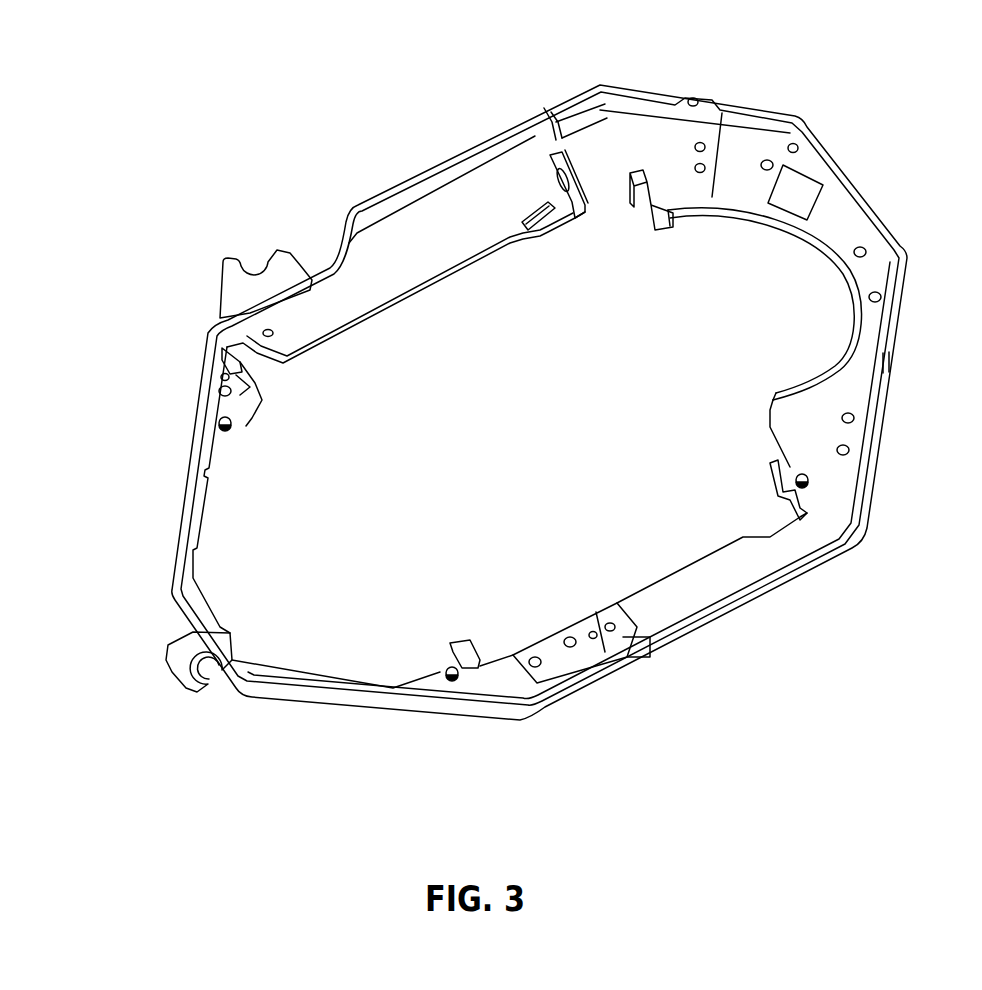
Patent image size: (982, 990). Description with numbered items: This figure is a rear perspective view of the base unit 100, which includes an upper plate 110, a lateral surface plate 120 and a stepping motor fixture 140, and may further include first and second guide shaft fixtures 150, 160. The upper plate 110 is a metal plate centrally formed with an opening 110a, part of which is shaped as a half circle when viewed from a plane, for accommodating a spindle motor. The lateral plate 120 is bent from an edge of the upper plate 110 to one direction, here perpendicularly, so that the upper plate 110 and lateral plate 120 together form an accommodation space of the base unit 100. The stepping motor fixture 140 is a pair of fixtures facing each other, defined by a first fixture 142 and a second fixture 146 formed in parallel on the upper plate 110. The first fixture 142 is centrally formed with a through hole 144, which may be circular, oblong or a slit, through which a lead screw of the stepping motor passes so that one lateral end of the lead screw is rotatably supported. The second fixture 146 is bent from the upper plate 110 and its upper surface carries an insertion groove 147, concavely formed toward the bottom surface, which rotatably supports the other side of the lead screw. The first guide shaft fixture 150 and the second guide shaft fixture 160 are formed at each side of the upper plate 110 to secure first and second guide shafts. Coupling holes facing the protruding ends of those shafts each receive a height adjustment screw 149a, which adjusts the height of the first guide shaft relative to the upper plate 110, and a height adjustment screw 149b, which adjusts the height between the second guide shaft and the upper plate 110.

The base unit 100 is at (446, 150).
The upper plate 110 is at (377, 282).
The opening 110a is at (527, 453).
The lateral surface plate 120 is at (398, 198).
The stepping motor fixture 140 is at (575, 155).
The first fixture 142 is at (586, 205).
The through hole 144 is at (548, 177).
The second fixture 146 is at (255, 384).
The insertion groove 147 is at (213, 364).
The height adjustment screw 149a is at (218, 423).
The height adjustment screw 149b is at (452, 680).
The first guide shaft fixture 150 is at (656, 188).
The second guide shaft fixture 160 is at (768, 495).